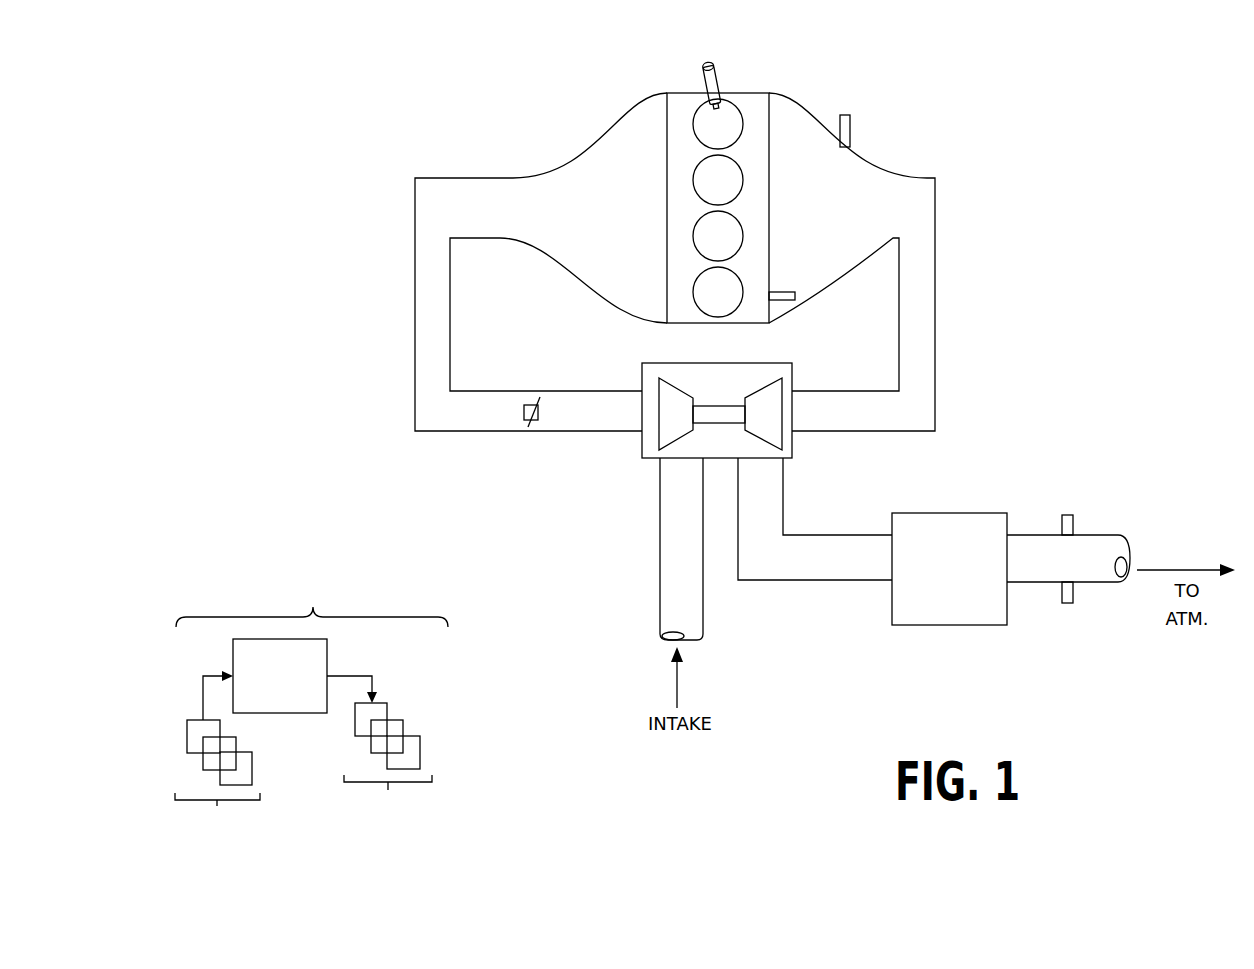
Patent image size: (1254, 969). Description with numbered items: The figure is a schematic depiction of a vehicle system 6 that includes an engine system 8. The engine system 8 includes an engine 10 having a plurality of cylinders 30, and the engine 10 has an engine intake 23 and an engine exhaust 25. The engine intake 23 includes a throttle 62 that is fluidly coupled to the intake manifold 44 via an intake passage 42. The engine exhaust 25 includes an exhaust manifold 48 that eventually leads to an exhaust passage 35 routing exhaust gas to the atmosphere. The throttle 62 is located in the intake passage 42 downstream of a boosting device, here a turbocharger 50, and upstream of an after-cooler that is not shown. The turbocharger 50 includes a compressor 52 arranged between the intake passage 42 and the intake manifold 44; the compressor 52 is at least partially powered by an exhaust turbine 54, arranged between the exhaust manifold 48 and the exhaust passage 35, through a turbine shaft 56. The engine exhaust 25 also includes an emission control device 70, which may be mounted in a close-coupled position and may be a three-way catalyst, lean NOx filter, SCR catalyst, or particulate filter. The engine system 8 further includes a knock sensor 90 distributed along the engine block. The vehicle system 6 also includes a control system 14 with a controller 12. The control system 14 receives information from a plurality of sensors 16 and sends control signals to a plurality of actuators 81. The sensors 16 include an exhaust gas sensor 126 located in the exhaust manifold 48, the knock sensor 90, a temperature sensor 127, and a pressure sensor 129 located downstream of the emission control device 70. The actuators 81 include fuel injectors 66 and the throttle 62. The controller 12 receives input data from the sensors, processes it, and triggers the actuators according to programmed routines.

The vehicle system 6 is at (146, 112).
The engine system 8 is at (948, 97).
The engine 10 is at (734, 208).
The controller 12 is at (280, 676).
The control system 14 is at (311, 706).
The sensors 16 is at (217, 785).
The engine intake 23 is at (584, 543).
The engine exhaust 25 is at (962, 322).
The cylinders 30 is at (743, 118).
The exhaust passage 35 is at (1083, 535).
The intake passage 42 is at (658, 578).
The intake manifold 44 is at (541, 262).
The exhaust manifold 48 is at (852, 262).
The turbocharger 50 is at (717, 393).
The compressor 52 is at (658, 403).
The exhaust turbine 54 is at (781, 403).
The turbine shaft 56 is at (702, 407).
The throttle 62 is at (539, 412).
The fuel injectors 66 is at (708, 58).
The emission control device 70 is at (932, 513).
The actuators 81 is at (388, 767).
The knock sensor 90 is at (795, 296).
The exhaust gas sensor 126 is at (850, 137).
The temperature sensor 127 is at (1073, 589).
The pressure sensor 129 is at (1068, 514).